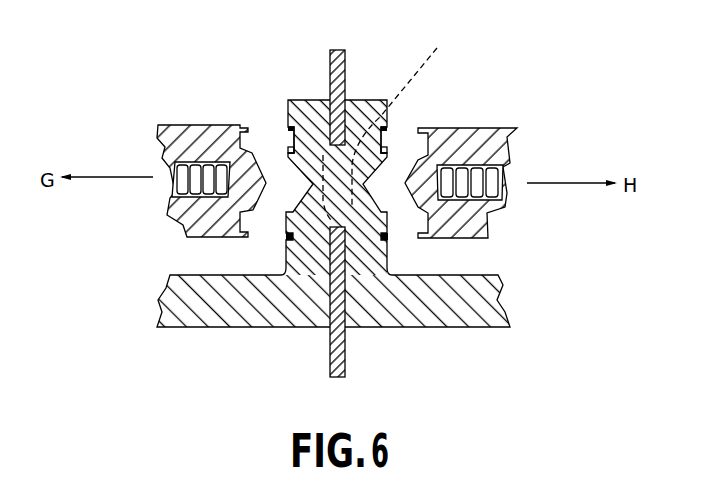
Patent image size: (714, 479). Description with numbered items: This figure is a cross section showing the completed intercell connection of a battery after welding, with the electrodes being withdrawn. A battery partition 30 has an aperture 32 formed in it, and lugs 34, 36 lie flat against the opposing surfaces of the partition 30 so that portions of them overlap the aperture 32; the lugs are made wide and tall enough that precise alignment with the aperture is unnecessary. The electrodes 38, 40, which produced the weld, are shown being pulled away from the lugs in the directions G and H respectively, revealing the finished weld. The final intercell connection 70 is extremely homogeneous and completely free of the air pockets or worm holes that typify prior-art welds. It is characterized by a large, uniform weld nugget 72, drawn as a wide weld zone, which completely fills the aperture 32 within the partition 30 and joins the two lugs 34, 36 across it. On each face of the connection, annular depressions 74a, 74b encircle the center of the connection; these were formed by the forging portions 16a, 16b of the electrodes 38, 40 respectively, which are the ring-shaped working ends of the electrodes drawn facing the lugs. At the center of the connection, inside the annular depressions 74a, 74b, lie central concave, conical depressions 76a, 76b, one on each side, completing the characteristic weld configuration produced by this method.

The battery partition 30 is at (340, 50).
The aperture 32 is at (330, 138).
The lug 34 is at (317, 104).
The lug 36 is at (366, 182).
The electrode 38 is at (182, 151).
The electrode 40 is at (517, 154).
The forging portion 16a is at (162, 76).
The forging portion 16b is at (505, 122).
The intercell connection 70 is at (368, 80).
The weld nugget 72 is at (393, 129).
The annular depression 74a is at (292, 127).
The annular depression 74b is at (385, 128).
The central concave conical depression 76a is at (310, 184).
The central concave conical depression 76b is at (387, 160).